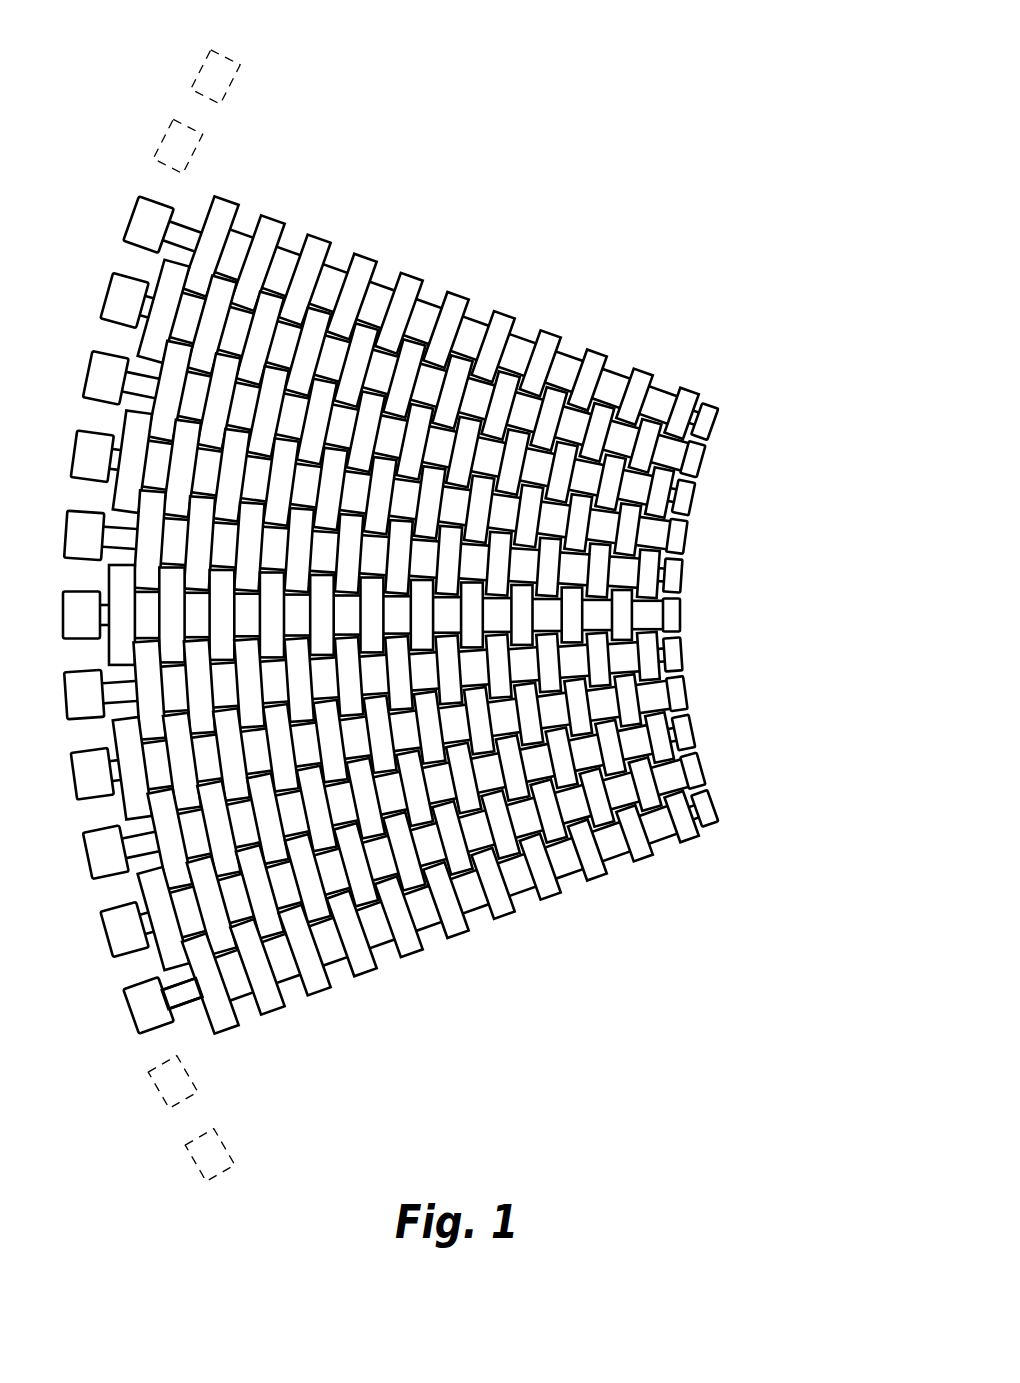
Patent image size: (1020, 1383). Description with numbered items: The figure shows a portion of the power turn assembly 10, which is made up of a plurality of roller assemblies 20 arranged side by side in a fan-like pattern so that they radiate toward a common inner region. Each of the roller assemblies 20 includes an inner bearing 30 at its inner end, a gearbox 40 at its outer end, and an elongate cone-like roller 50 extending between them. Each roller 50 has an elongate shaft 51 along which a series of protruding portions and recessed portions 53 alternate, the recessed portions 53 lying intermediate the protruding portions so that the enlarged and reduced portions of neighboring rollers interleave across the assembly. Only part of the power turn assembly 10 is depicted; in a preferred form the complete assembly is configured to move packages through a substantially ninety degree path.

The power turn assembly 10 is at (456, 610).
The roller assemblies 20 is at (456, 591).
The inner bearing 30 is at (693, 775).
The gearbox 40 is at (97, 347).
The roller 50 is at (293, 1040).
The elongate shaft 51 is at (193, 1007).
The recessed portions 53 is at (333, 955).